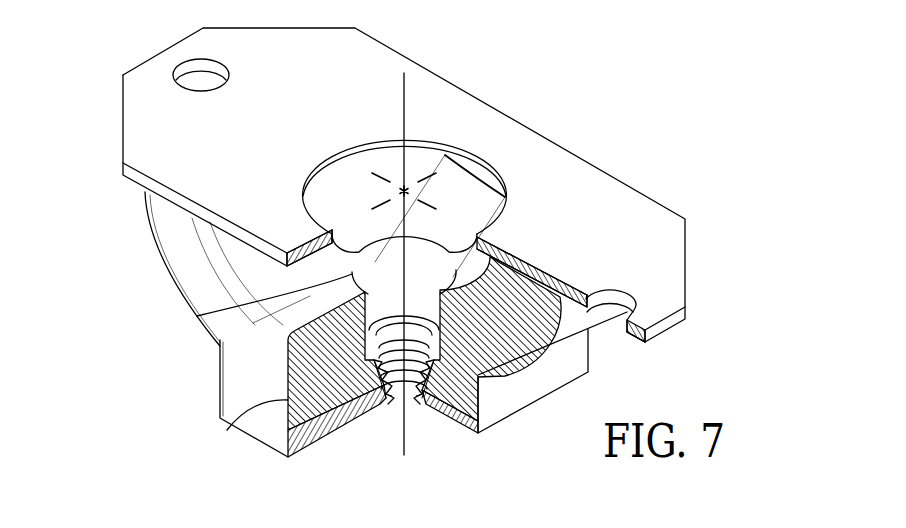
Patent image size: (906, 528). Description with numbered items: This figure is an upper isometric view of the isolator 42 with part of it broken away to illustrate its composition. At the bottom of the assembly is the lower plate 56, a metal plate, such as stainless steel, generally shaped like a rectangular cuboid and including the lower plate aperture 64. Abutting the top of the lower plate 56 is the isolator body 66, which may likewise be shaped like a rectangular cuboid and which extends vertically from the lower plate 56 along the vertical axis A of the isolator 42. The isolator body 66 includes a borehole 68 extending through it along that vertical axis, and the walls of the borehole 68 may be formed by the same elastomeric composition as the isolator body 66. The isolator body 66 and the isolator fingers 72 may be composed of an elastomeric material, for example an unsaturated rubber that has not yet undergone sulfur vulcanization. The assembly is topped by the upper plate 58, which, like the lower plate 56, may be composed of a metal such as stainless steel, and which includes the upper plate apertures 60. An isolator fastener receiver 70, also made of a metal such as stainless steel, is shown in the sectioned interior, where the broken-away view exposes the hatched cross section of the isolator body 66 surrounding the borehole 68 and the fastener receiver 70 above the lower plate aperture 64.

The isolator 42 is at (584, 97).
The upper plate 58 is at (167, 130).
The upper plate apertures 60 is at (193, 76).
The isolator fingers 72 is at (180, 236).
The borehole 68 is at (197, 316).
The isolator body 66 is at (287, 403).
The lower plate 56 is at (452, 423).
The lower plate aperture 64 is at (395, 383).
The isolator fastener receiver 70 is at (416, 383).
The central axis A is at (402, 104).